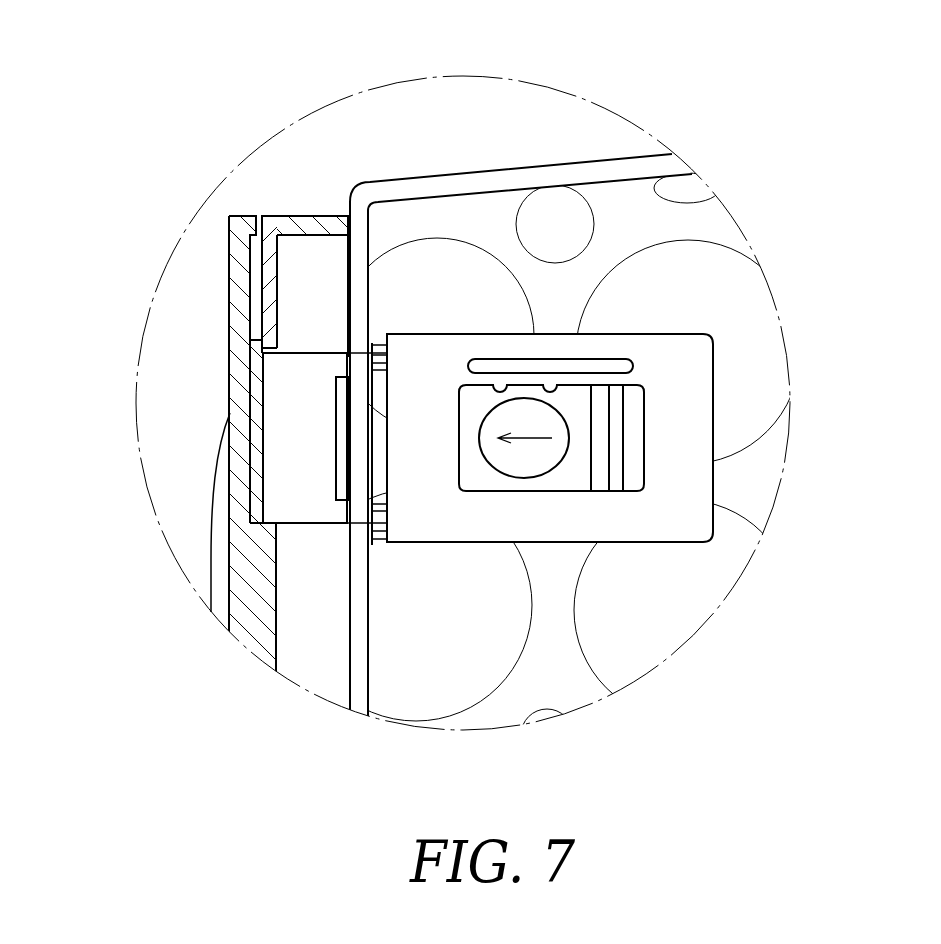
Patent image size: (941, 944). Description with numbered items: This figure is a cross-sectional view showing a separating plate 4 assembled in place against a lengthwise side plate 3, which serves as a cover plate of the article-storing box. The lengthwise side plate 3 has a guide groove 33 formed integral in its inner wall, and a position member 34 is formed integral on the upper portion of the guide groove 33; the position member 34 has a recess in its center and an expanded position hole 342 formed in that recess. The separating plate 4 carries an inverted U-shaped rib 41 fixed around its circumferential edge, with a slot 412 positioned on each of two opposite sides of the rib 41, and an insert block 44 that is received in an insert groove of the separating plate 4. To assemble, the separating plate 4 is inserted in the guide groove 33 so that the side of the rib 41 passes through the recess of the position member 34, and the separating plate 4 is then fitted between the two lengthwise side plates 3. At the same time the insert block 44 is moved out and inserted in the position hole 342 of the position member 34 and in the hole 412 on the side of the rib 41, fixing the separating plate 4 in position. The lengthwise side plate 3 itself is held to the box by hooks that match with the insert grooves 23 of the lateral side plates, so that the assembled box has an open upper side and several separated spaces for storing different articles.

The lengthwise side plate 3 is at (238, 333).
The guide groove 33 is at (297, 633).
The position member 34 is at (283, 435).
The position hole 342 is at (350, 210).
The separating plate 4 is at (657, 525).
The inverted U-shaped rib 41 is at (580, 173).
The slot 412 is at (358, 535).
The insert block 44 is at (570, 476).
The insert groove 23 is at (387, 545).